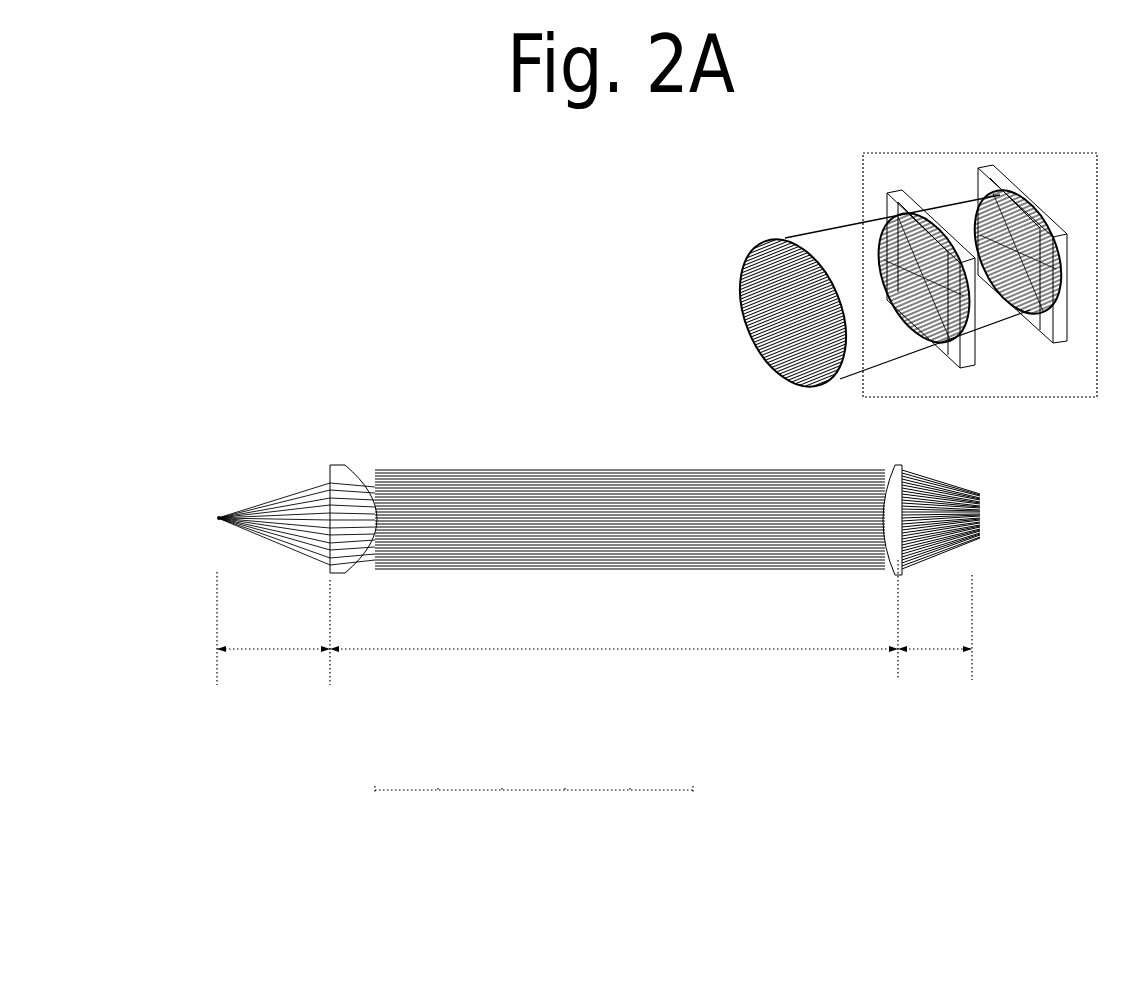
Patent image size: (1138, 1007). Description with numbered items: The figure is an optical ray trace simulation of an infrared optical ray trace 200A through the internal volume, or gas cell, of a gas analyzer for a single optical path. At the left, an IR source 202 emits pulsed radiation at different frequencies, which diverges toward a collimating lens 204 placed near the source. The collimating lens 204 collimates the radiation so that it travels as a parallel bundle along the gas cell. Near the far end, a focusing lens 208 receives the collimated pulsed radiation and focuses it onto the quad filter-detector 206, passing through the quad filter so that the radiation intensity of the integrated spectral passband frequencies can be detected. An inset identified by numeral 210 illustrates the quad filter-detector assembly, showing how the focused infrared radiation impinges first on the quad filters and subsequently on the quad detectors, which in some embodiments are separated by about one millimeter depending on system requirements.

The infrared optical ray trace 200A is at (258, 779).
The IR source 202 is at (218, 505).
The collimating lens 204 is at (338, 447).
The quad filter-detector 206 is at (1004, 521).
The focusing lens 208 is at (870, 584).
The quad filter-detector assembly detail 210 is at (792, 200).